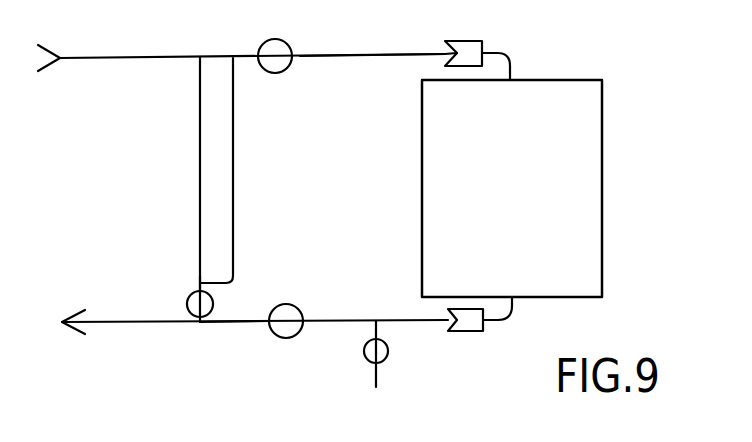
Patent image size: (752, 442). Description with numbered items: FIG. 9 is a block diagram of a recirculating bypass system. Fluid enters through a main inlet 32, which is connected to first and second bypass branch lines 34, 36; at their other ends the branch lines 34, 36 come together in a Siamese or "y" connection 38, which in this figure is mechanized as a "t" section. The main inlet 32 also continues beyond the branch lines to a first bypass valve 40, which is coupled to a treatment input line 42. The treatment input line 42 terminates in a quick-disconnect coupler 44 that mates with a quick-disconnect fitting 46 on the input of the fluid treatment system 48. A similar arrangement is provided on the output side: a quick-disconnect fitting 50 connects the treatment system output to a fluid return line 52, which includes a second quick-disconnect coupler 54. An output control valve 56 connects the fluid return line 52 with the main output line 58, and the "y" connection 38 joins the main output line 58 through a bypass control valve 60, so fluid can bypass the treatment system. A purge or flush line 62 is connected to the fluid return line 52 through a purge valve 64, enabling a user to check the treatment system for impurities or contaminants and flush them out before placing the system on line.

The main inlet 32 is at (124, 60).
The first bypass branch line 34 is at (200, 150).
The second bypass branch line 36 is at (235, 147).
The y connection 38 is at (200, 282).
The first bypass valve 40 is at (283, 41).
The treatment input line 42 is at (323, 58).
The quick-disconnect coupler 44 is at (456, 40).
The quick-disconnect fitting 46 is at (483, 48).
The fluid treatment system 48 is at (604, 128).
The quick-disconnect fitting 50 is at (491, 317).
The fluid return line 52 is at (420, 322).
The second quick-disconnect coupler 54 is at (448, 314).
The output control valve 56 is at (280, 305).
The main output line 58 is at (242, 325).
The bypass control valve 60 is at (206, 309).
The purge line 62 is at (368, 329).
The purge valve 64 is at (383, 363).